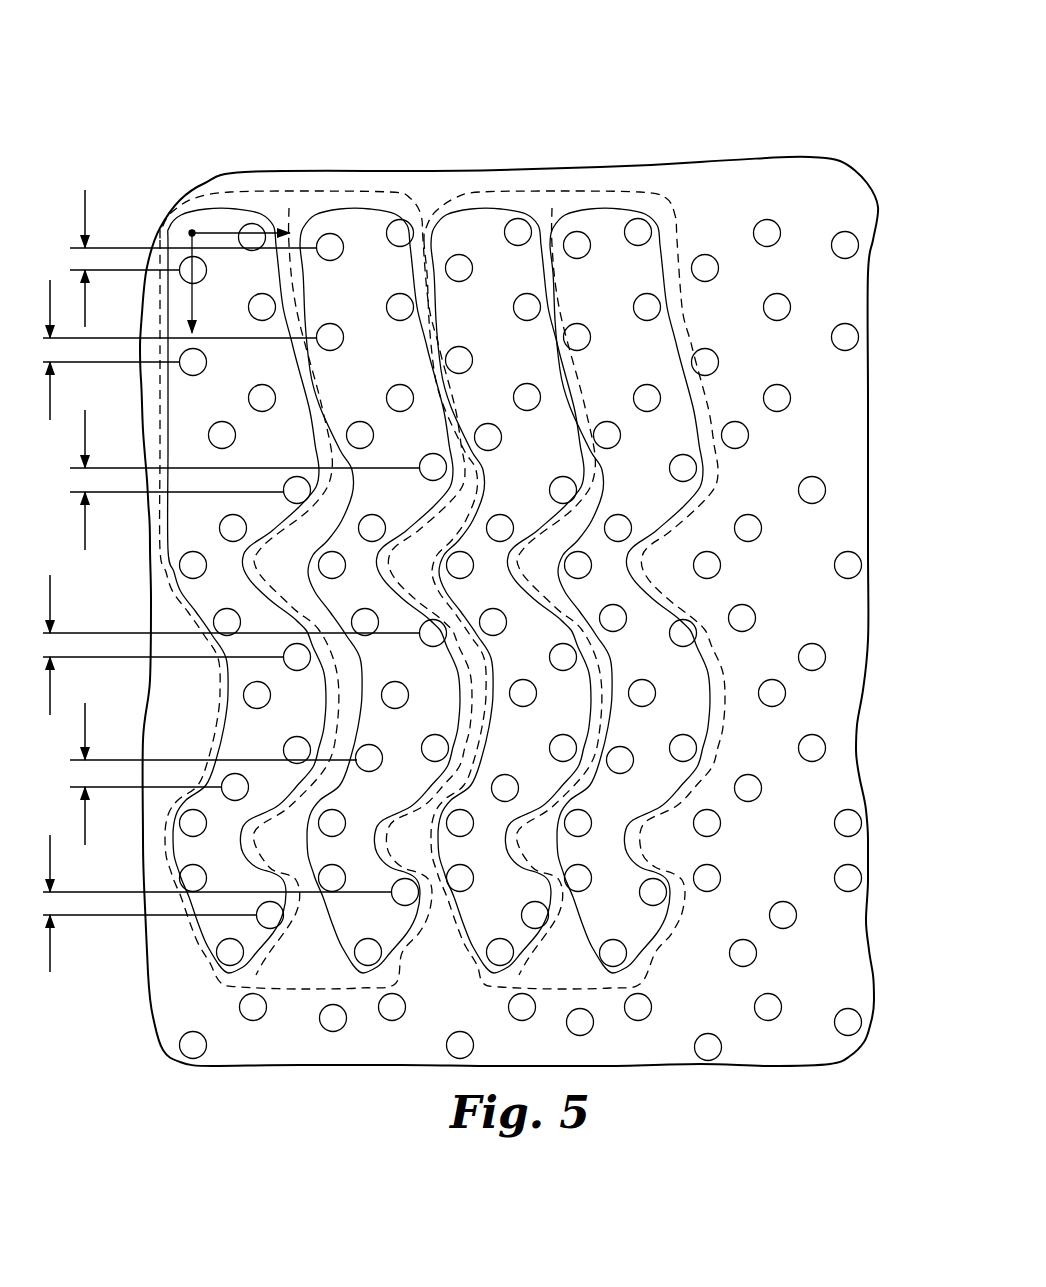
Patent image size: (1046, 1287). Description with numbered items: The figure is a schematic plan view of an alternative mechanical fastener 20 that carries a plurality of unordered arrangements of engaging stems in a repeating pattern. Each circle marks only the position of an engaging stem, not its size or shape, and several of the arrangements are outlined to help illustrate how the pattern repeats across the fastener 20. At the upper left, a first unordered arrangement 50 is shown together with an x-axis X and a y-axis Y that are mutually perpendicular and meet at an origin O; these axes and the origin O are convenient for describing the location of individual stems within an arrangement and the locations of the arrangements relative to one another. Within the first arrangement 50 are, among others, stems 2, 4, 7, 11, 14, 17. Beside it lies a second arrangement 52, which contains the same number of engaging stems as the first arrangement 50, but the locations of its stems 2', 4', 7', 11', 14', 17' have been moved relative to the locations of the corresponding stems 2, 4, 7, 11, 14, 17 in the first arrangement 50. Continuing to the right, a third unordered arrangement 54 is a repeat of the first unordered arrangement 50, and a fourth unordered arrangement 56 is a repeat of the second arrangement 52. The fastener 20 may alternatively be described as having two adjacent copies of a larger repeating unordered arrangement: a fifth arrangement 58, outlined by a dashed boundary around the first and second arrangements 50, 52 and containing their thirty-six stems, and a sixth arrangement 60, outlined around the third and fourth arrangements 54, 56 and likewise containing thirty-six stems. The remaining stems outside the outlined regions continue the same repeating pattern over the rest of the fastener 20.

The mechanical fastener 20 is at (737, 127).
The stem 2 is at (326, 209).
The stem 2' is at (463, 190).
The stem 4 is at (329, 335).
The stem 4' is at (458, 309).
The stem 7 is at (415, 503).
The stem 7' is at (541, 484).
The stem 11 is at (426, 676).
The stem 11' is at (563, 659).
The stem 14 is at (379, 762).
The stem 14' is at (512, 740).
The stem 17 is at (403, 924).
The stem 17' is at (499, 903).
The first unordered arrangement 50 is at (174, 234).
The second arrangement 52 is at (373, 195).
The third unordered arrangement 54 is at (515, 205).
The fourth unordered arrangement 56 is at (642, 205).
The fifth arrangement 58 is at (160, 588).
The sixth arrangement 60 is at (682, 333).
The origin O is at (190, 229).
The x-axis X is at (218, 229).
The y-axis Y is at (190, 298).